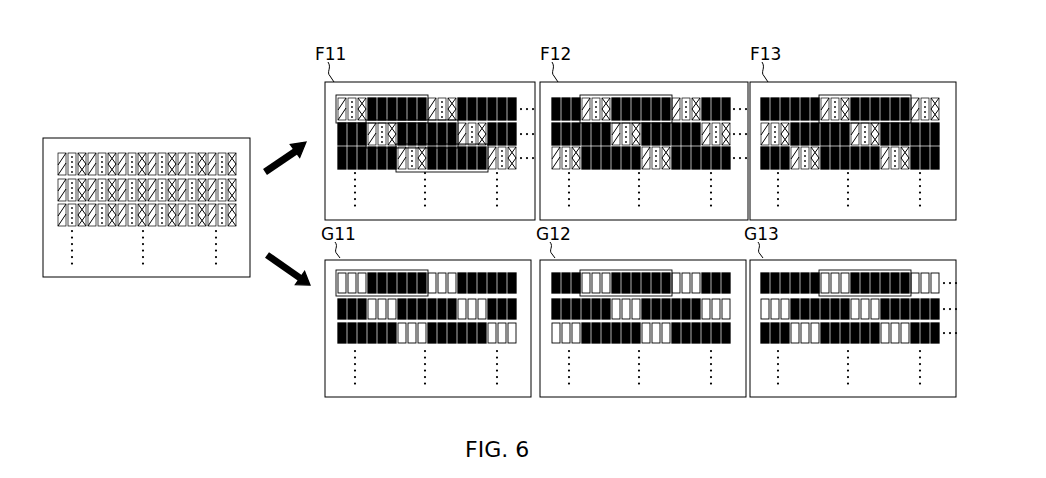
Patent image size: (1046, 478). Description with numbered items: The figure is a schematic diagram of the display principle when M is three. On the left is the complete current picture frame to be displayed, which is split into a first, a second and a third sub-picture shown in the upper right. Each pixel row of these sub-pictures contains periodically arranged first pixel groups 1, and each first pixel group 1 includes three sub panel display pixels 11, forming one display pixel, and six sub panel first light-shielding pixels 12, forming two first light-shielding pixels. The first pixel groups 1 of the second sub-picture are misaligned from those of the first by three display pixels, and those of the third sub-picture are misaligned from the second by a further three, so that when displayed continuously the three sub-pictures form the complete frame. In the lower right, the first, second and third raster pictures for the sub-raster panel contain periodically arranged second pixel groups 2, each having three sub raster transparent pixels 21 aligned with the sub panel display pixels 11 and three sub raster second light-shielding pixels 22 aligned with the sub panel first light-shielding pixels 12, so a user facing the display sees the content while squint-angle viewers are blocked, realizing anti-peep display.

The first pixel group 1 is at (372, 95).
The sub panel display pixel 11 is at (362, 97).
The sub panel first light-shielding pixel 12 is at (422, 97).
The second pixel group 2 is at (373, 270).
The sub raster transparent pixel 21 is at (362, 272).
The sub raster second light-shielding pixel 22 is at (422, 272).